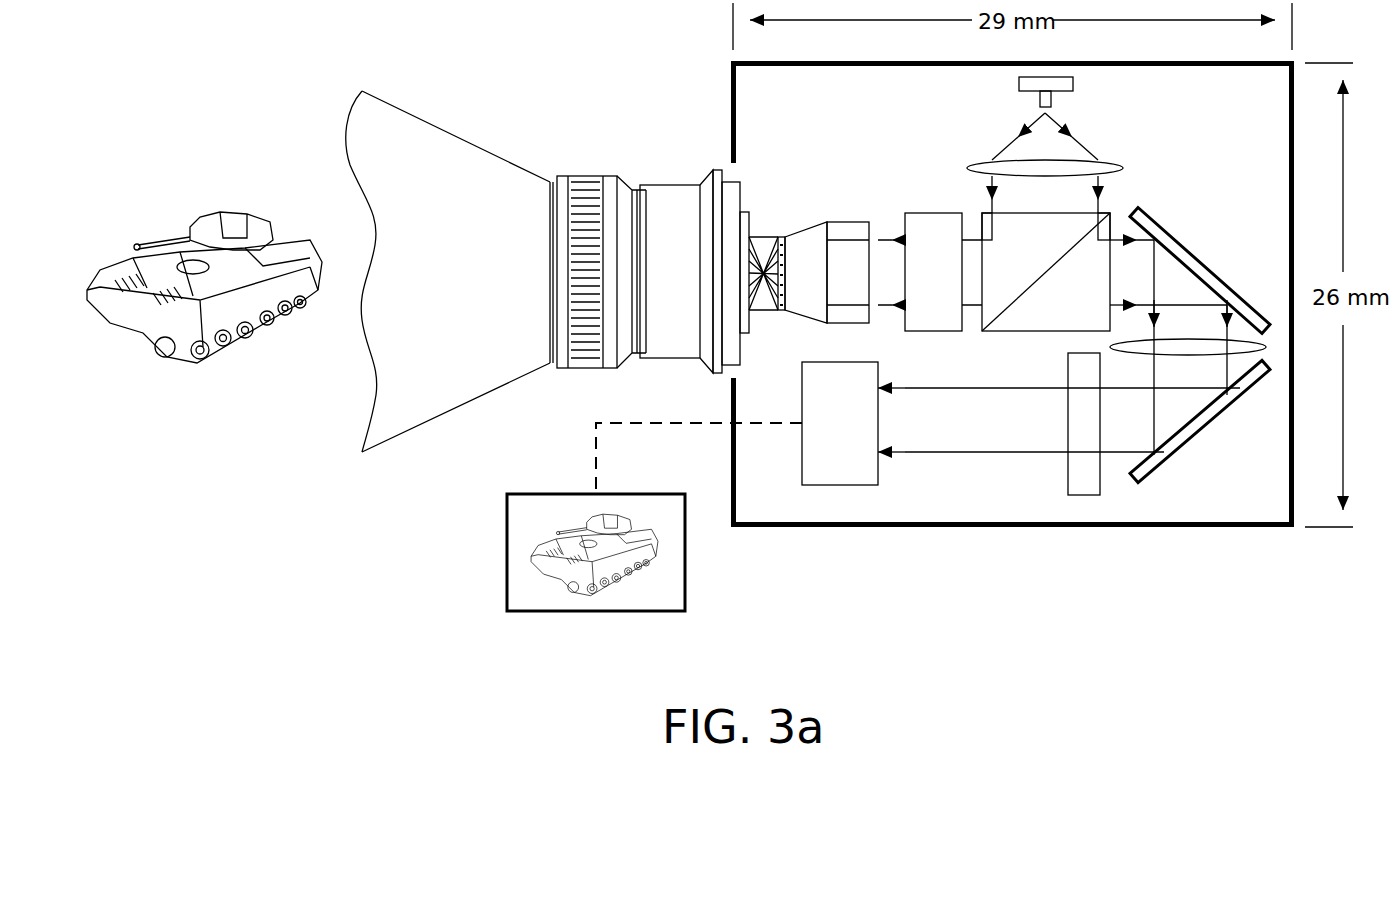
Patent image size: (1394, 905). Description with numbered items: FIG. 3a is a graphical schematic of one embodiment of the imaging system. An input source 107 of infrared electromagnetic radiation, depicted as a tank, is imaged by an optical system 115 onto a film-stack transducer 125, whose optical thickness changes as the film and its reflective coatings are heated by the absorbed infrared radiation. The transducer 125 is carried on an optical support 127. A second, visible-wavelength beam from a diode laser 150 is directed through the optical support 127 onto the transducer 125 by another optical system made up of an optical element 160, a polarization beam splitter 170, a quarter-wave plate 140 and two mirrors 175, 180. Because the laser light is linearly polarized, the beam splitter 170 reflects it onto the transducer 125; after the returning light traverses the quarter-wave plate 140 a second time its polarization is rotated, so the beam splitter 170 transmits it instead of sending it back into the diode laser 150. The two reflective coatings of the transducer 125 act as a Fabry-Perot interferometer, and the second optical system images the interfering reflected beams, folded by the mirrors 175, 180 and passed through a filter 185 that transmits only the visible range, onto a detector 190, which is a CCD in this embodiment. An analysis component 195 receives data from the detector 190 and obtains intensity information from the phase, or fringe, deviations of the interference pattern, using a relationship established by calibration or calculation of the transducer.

The input source 107 is at (277, 333).
The optical system 115 is at (596, 172).
The transducer 125 is at (808, 222).
The optical support 127 is at (856, 222).
The quarter-wave plate 140 is at (955, 331).
The diode laser 150 is at (1024, 99).
The optical element 160 is at (1110, 162).
The beam splitter 170 is at (1042, 331).
The mirror 175 is at (1182, 237).
The mirror 180 is at (1210, 423).
The filter 185 is at (1086, 495).
The detector 190 is at (840, 485).
The analysis component 195 is at (507, 550).